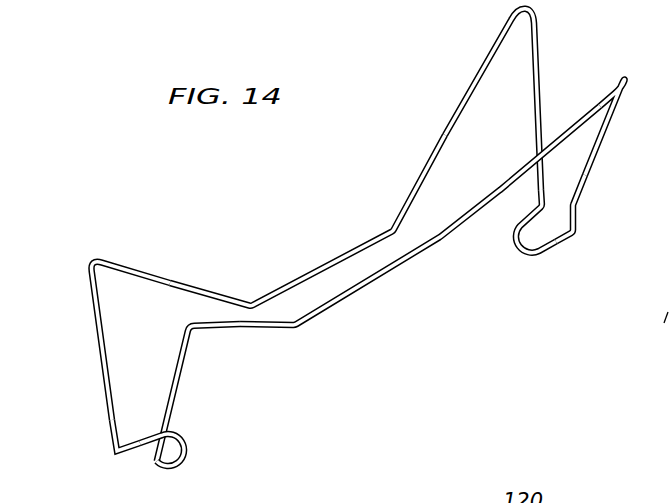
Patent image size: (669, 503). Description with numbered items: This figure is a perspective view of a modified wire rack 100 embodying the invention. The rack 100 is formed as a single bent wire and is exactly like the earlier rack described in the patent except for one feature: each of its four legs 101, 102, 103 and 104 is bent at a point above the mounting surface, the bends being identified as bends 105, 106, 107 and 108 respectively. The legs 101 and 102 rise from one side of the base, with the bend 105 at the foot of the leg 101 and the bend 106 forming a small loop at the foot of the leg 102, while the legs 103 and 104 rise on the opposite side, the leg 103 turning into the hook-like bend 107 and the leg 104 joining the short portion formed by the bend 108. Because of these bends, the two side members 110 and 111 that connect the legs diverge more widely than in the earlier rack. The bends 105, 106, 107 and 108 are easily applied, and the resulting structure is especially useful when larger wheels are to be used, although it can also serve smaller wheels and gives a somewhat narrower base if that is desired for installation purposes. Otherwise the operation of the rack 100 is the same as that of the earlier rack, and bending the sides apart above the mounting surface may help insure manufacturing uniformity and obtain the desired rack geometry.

The wire rack 100 is at (349, 256).
The leg 101 is at (97, 344).
The leg 102 is at (182, 364).
The leg 103 is at (537, 70).
The leg 104 is at (603, 153).
The bend 105 is at (113, 432).
The bend 106 is at (146, 452).
The bend 107 is at (530, 194).
The bend 108 is at (578, 203).
The side member 110 is at (304, 281).
The side member 111 is at (338, 306).